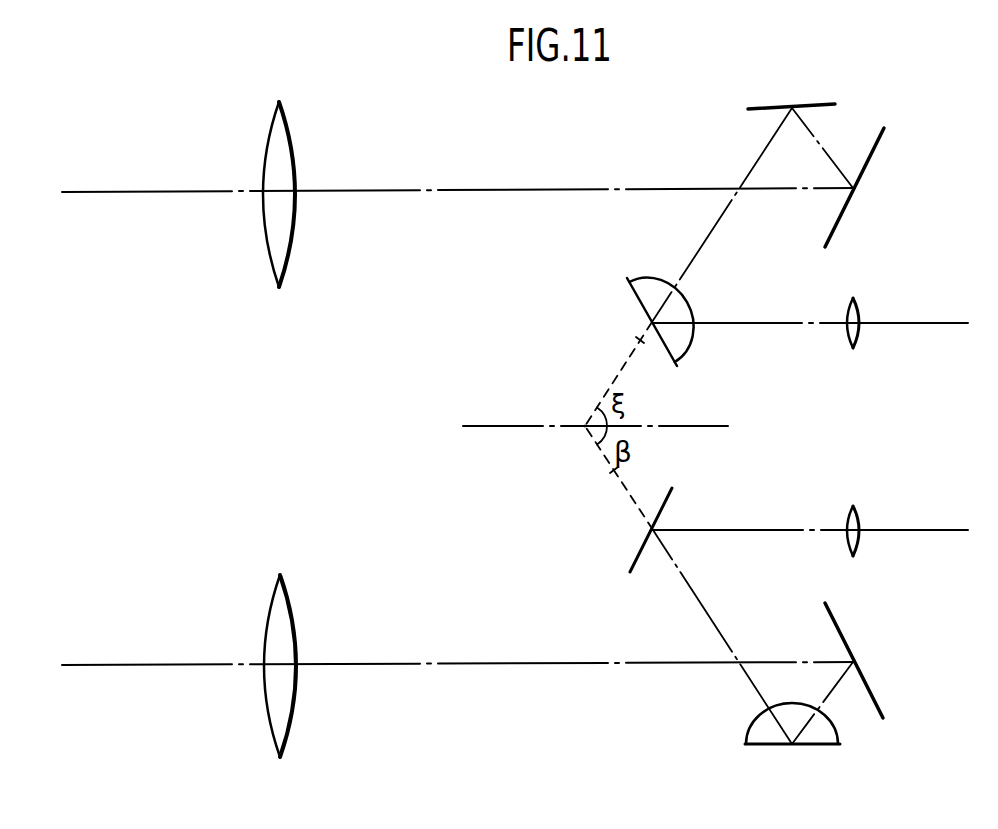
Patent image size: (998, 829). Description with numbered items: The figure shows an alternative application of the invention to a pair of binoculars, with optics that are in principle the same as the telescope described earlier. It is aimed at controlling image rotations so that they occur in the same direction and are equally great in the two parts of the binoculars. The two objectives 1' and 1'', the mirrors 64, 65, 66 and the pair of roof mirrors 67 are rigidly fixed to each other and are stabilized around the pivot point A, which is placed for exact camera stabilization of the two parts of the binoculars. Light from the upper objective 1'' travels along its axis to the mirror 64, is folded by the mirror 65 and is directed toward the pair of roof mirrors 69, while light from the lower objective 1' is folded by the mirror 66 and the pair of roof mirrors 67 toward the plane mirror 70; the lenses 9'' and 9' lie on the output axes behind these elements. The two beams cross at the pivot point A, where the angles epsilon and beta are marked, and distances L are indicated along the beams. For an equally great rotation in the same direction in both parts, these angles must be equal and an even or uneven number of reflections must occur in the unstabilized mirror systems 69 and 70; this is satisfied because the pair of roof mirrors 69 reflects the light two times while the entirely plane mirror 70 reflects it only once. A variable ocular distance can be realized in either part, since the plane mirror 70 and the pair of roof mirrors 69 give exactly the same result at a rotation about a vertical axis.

The objective 1'' is at (308, 171).
The objective 1' is at (307, 644).
The image-forming lens (second channel) 9'' is at (890, 309).
The image-forming lens (first channel) 9' is at (887, 513).
The mirror 64 is at (872, 150).
The mirror 65 is at (805, 105).
The mirror 66 is at (866, 684).
The pair of roof mirrors 67 is at (811, 748).
The pair of roof mirrors 69 is at (647, 280).
The plane mirror 70 is at (672, 488).
The pivot point A is at (580, 422).
The distance between point A and beam splitters L is at (636, 339).